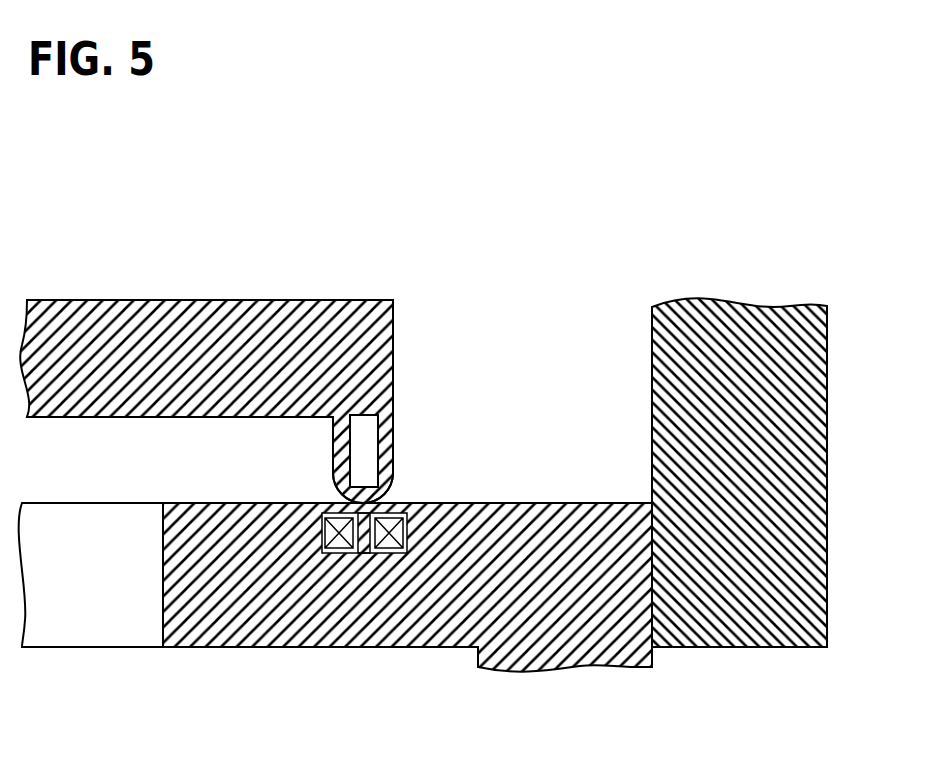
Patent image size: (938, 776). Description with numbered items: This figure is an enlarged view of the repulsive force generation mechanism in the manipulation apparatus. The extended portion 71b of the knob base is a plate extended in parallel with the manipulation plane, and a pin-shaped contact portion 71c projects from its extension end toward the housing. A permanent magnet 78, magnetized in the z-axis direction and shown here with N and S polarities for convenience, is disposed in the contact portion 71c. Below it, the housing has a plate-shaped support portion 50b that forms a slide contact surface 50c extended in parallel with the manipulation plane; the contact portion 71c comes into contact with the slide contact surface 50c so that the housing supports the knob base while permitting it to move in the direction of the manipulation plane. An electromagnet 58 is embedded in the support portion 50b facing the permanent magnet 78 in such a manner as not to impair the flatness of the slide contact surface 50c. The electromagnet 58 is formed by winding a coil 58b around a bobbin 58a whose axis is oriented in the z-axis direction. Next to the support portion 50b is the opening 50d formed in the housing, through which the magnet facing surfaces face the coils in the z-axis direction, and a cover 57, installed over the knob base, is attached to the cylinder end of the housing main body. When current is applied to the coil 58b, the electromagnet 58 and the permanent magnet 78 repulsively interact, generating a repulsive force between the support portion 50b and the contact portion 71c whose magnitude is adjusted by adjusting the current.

The extended portion 71b is at (308, 306).
The contact portion 71c is at (392, 480).
The permanent magnet 78 is at (372, 408).
The electromagnet 58 is at (447, 485).
The bobbin 58a is at (380, 512).
The coil 58b is at (403, 538).
The support portion 50b is at (267, 618).
The slide contact surface 50c is at (223, 503).
The opening 50d is at (163, 570).
The cover 57 is at (813, 473).